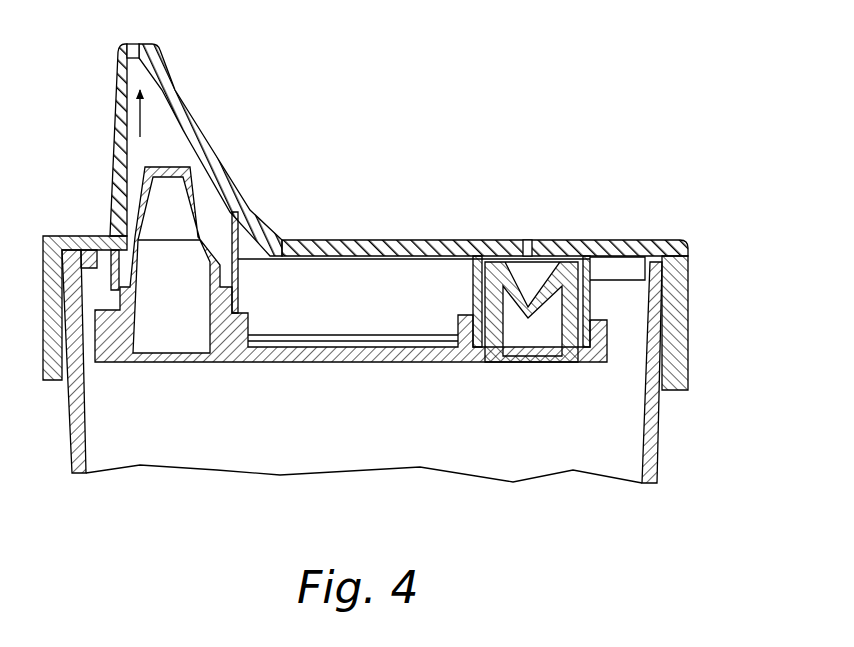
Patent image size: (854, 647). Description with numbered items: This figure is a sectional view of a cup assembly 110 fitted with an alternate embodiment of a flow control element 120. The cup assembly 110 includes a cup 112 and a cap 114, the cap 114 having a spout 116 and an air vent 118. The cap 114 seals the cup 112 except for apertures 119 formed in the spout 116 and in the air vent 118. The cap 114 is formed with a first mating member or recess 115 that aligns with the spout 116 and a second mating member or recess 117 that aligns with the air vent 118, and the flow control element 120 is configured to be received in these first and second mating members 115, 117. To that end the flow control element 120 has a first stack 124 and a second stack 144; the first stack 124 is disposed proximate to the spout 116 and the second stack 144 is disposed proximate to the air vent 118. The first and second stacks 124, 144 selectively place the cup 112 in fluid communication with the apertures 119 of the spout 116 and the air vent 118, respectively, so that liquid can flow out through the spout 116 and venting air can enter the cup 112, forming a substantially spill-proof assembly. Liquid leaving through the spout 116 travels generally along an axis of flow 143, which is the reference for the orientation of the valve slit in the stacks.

The cup assembly 110 is at (612, 136).
The cup 112 is at (660, 430).
The cap 114 is at (690, 318).
The first mating member or recess 115 is at (240, 268).
The spout 116 is at (110, 122).
The second mating member or recess 117 is at (476, 300).
The air vent 118 is at (527, 203).
The apertures 119 is at (136, 44).
The flow control element 120 is at (288, 376).
The first stack 124 is at (183, 335).
The axis of flow 143 is at (121, 63).
The second stack 144 is at (527, 342).